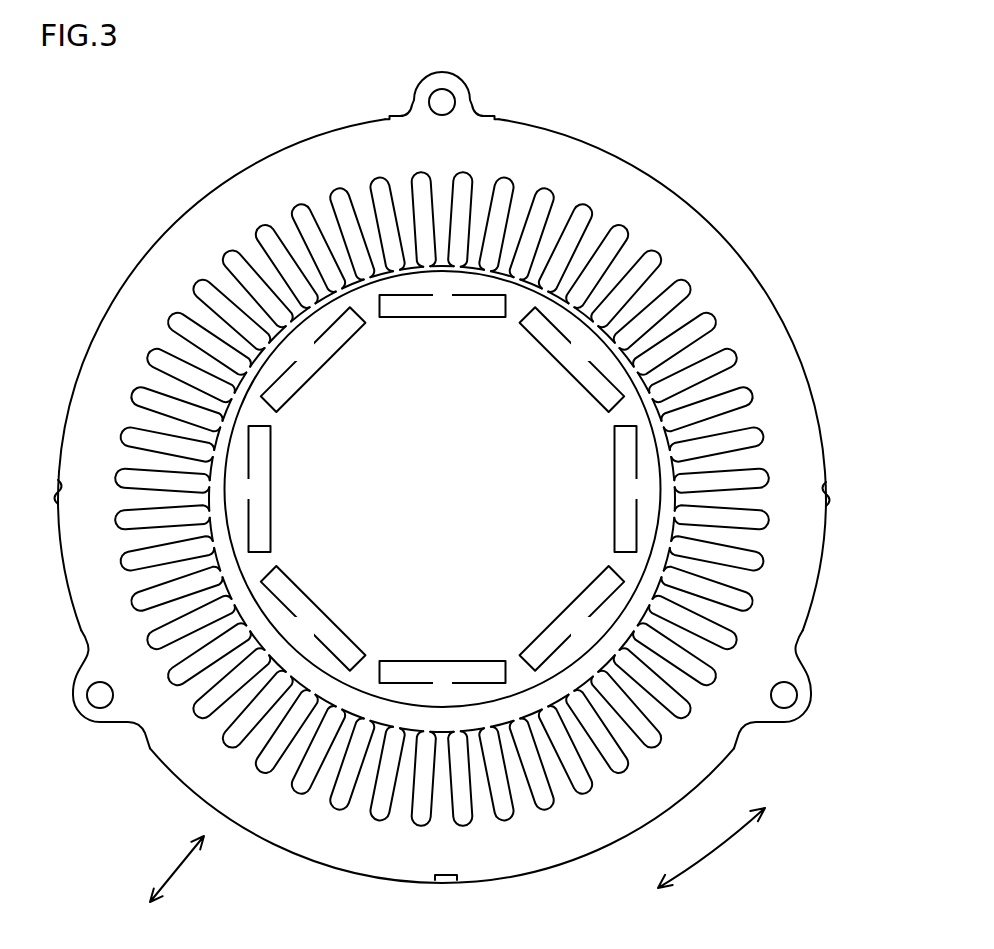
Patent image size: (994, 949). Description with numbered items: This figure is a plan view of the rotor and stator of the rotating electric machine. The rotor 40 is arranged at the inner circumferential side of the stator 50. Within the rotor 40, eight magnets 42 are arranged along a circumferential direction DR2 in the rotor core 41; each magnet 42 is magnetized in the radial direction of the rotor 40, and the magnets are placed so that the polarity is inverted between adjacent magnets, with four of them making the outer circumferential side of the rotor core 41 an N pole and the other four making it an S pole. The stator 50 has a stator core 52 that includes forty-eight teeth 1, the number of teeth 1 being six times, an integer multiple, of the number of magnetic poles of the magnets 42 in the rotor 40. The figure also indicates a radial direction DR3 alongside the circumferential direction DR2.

The teeth 1 is at (462, 502).
The stator 50 is at (442, 473).
The stator core 52 is at (668, 215).
The rotor core 41 is at (625, 413).
The magnets 42 is at (442, 489).
The rotor 40 is at (547, 606).
The circumferential direction DR2 is at (713, 855).
The radial direction DR3 is at (178, 868).